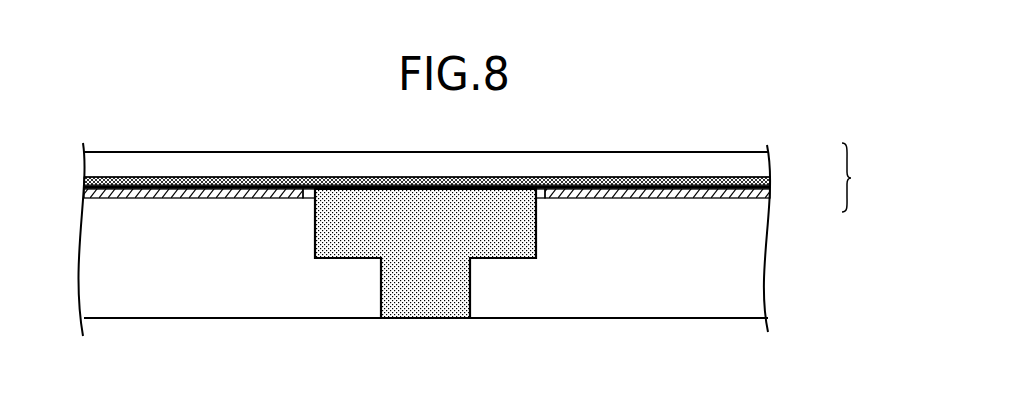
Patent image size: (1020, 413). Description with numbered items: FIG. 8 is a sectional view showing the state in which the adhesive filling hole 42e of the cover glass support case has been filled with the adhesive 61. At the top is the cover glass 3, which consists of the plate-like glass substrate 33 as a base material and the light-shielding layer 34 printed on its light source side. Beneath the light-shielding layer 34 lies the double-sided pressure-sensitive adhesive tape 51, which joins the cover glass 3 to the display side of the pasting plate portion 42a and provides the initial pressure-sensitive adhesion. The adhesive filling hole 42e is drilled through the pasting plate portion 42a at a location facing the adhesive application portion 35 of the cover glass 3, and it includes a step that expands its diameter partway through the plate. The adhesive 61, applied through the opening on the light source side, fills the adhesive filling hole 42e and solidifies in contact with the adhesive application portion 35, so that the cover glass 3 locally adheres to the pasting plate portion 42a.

The cover glass 3 is at (856, 177).
The glass substrate 33 is at (767, 167).
The light-shielding layer 34 is at (768, 183).
The adhesive application portion 35 is at (354, 189).
The pasting plate portion 42a is at (754, 259).
The adhesive filling hole 42e is at (538, 230).
The double-sided pressure-sensitive adhesive tape 51 is at (95, 193).
The adhesive 61 is at (427, 298).